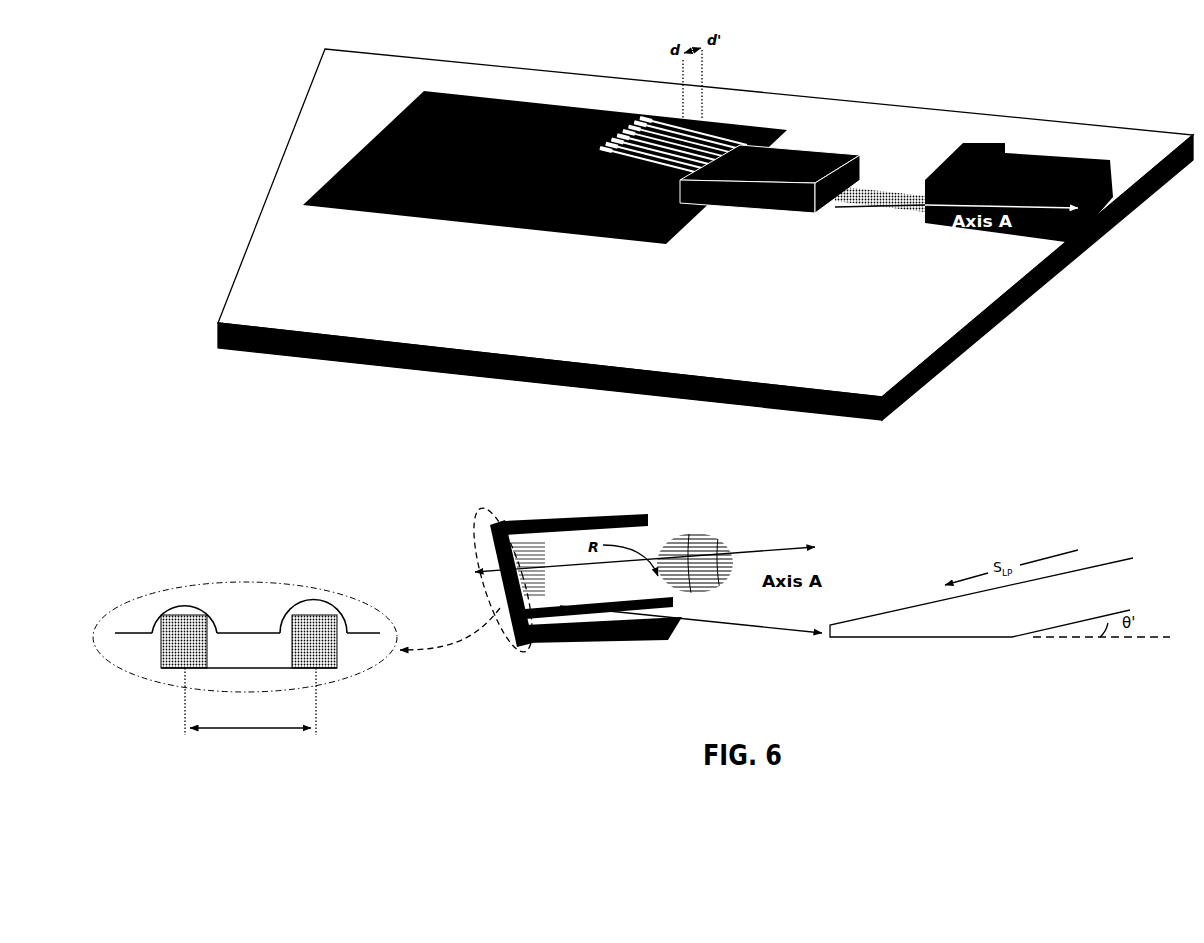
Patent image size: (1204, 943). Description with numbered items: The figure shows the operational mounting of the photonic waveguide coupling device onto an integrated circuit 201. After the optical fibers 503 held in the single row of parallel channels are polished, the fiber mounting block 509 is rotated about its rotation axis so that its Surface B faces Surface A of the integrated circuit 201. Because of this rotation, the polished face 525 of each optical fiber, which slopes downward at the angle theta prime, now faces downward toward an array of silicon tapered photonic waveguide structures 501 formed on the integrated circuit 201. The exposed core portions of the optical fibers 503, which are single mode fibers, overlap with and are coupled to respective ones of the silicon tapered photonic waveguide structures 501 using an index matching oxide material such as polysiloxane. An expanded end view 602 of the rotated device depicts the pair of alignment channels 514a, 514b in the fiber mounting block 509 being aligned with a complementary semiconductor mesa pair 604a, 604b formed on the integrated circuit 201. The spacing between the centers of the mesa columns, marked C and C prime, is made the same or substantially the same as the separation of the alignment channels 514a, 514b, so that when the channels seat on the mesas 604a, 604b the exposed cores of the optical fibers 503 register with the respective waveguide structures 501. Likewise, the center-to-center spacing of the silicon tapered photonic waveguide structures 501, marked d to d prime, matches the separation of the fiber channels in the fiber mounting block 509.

The integrated circuit 201 is at (522, 164).
The array of silicon tapered photonic waveguide structures 501 is at (668, 125).
The optical fibers 503 is at (687, 536).
The fiber mounting block 509 is at (572, 554).
The alignment channel 514a is at (187, 610).
The alignment channel 514b is at (317, 610).
The polished face 525 is at (943, 638).
The expanded end view 602 is at (245, 632).
The semiconductor mesa 604a is at (200, 642).
The semiconductor mesa 604b is at (329, 642).